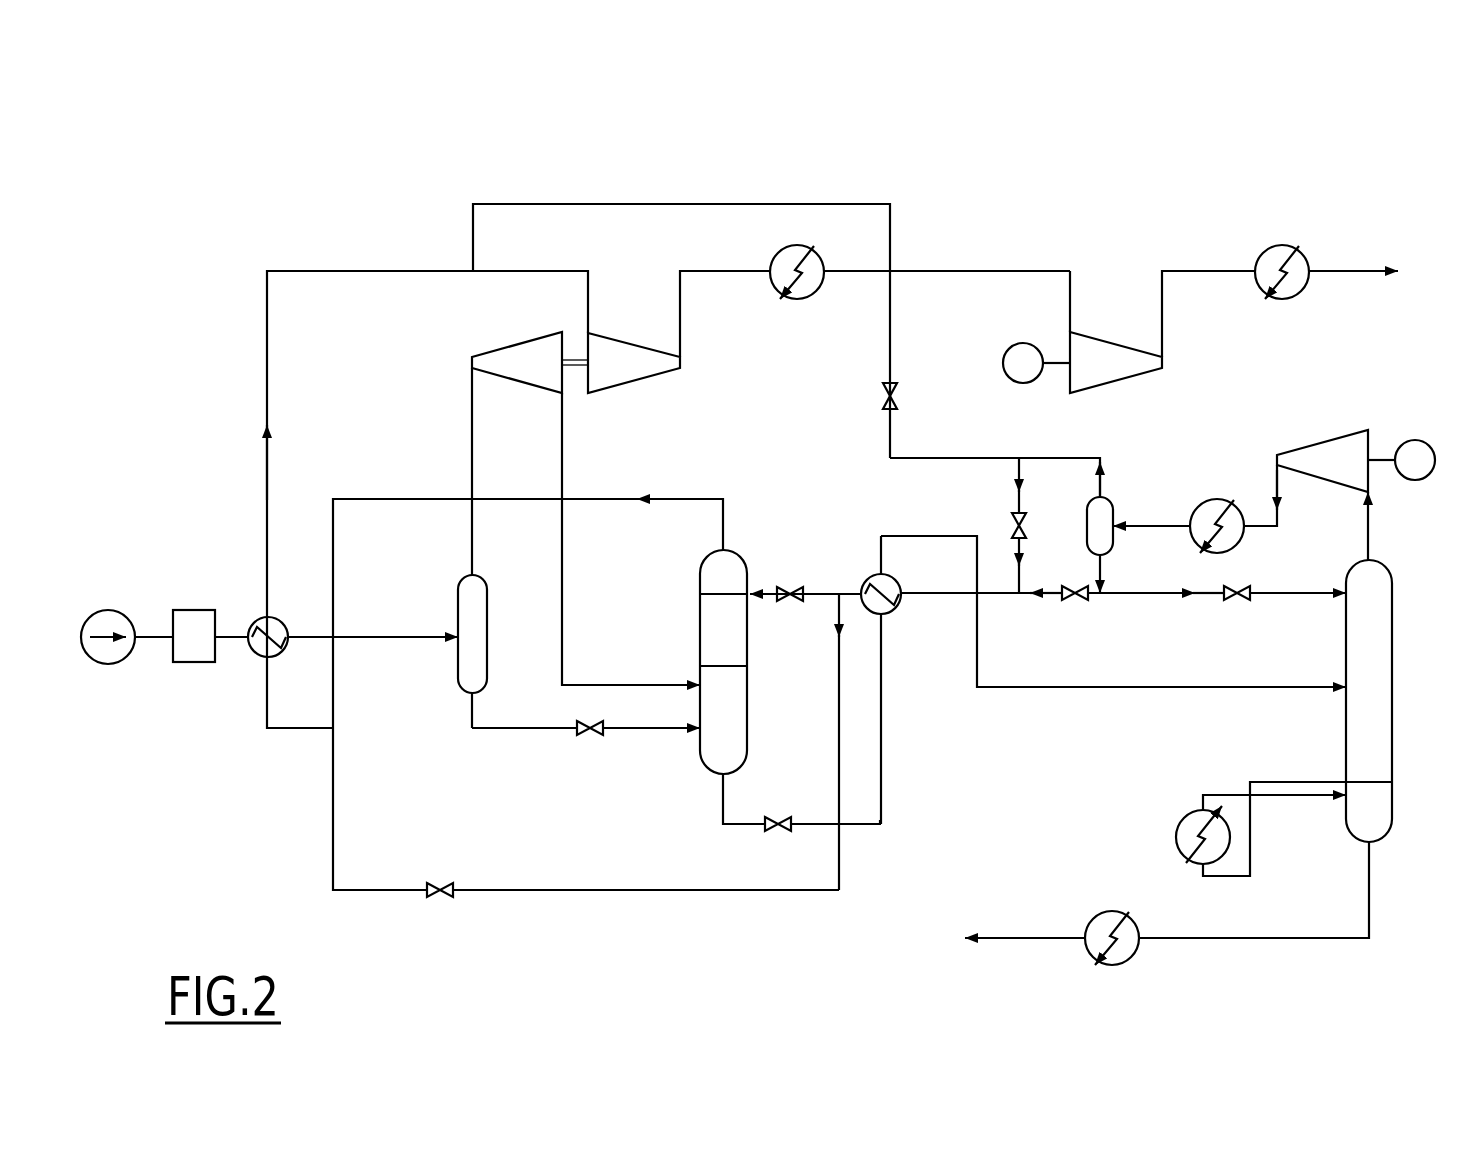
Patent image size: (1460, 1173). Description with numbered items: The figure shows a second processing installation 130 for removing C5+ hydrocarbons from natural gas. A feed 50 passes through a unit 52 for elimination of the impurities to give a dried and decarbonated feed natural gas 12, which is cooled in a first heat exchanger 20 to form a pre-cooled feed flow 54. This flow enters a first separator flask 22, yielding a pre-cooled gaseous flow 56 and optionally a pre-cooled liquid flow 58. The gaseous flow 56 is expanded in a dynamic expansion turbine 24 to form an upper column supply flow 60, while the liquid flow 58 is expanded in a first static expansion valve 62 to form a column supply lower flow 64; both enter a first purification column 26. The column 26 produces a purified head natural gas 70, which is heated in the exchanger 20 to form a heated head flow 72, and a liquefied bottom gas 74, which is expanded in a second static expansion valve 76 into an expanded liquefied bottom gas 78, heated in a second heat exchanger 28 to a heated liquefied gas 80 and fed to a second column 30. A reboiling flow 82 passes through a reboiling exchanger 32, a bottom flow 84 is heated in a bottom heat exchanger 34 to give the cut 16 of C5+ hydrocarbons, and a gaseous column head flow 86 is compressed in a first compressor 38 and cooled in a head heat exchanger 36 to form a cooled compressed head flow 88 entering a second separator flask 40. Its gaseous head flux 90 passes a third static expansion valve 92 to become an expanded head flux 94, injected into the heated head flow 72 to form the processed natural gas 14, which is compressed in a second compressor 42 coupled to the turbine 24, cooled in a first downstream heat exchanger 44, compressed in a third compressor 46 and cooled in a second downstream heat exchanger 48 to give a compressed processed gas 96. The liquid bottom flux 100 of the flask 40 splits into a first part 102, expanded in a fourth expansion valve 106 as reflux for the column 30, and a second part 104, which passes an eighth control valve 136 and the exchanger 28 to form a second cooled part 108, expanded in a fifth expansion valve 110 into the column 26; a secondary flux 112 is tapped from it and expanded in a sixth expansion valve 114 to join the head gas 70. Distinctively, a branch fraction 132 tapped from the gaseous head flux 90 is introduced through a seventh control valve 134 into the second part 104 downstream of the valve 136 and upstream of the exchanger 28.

The second installation 130 is at (228, 231).
The feed natural gas 12 is at (231, 634).
The processed natural gas 14 is at (589, 300).
The cut of C5+ hydrocarbons 16 is at (1012, 940).
The first heat exchanger 20 is at (255, 652).
The first separator flask 22 is at (458, 672).
The dynamic expansion turbine 24 is at (507, 356).
The first purification column 26 is at (700, 612).
The second heat exchanger 28 is at (897, 609).
The second column 30 is at (1393, 705).
The reboiling exchanger 32 is at (1176, 837).
The bottom heat exchanger 34 is at (1100, 916).
The head heat exchanger 36 is at (1205, 504).
The first compressor 38 is at (1336, 446).
The second separator flask 40 is at (1087, 518).
The second compressor 42 is at (640, 375).
The first downstream heat exchanger 44 is at (776, 252).
The third compressor 46 is at (1120, 377).
The second downstream heat exchanger 48 is at (1268, 252).
The feed 50 is at (146, 638).
The unit for elimination of the impurities 52 is at (179, 610).
The pre-cooled feed flow 54 is at (370, 634).
The pre-cooled gaseous flow 56 is at (471, 413).
The pre-cooled liquid flow 58 is at (497, 729).
The upper column supply flow 60 is at (563, 556).
The first static expansion valve 62 is at (591, 737).
The column supply lower flow 64 is at (655, 729).
The purified head natural gas 70 is at (699, 497).
The heated head flow 72 is at (266, 318).
The liquefied bottom gas 74 is at (740, 826).
The second static expansion valve 76 is at (781, 814).
The expanded liquefied bottom gas 78 is at (882, 745).
The heated liquefied gas 80 is at (1085, 688).
The reboiling flow 82 is at (1300, 781).
The bottom flow 84 is at (1370, 893).
The gaseous column head flow 86 is at (1371, 532).
The cooled compressed head flow 88 is at (1160, 522).
The gaseous head flux 90 is at (1070, 458).
The third static expansion valve 92 is at (883, 393).
The expanded head flux 94 is at (641, 204).
The compressed processed gas 96 is at (1352, 269).
The liquid bottom flux 100 is at (1104, 567).
The first part 102 is at (1140, 595).
The second part 104 is at (925, 592).
The fourth expansion valve 106 is at (1243, 601).
The second cooled part 108 is at (850, 590).
The fifth expansion valve 110 is at (798, 586).
The secondary flux 112 is at (540, 892).
The sixth expansion valve 114 is at (441, 898).
The branch fraction 132 is at (1017, 472).
The seventh control valve 134 is at (1012, 526).
The eighth control valve 136 is at (1068, 601).